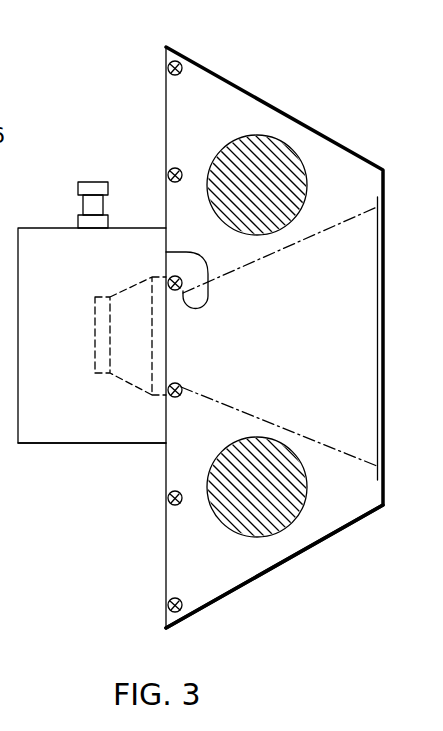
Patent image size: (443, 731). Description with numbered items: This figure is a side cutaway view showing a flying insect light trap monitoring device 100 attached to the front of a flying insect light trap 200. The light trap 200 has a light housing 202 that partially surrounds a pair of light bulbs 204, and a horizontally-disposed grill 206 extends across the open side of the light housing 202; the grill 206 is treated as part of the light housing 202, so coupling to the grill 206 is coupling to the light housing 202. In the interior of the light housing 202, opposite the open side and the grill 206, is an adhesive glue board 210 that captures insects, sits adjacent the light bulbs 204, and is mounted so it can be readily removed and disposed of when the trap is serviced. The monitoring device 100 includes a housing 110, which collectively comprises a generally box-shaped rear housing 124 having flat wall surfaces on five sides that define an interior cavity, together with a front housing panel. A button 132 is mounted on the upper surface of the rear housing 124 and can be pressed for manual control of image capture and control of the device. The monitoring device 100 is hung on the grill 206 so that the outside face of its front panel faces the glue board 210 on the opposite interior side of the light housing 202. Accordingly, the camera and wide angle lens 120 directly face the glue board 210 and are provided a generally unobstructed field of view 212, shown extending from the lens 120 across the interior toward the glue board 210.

The flying insect light trap monitoring device 100 is at (87, 305).
The housing 110 is at (127, 428).
The wide angle lens 120 is at (136, 388).
The rear housing 124 is at (84, 445).
The button 132 is at (92, 181).
The flying insect light trap 200 is at (268, 72).
The light housing 202 is at (329, 539).
The light bulbs 204 is at (212, 150).
The grill 206 is at (165, 68).
The adhesive glue board 210 is at (375, 320).
The field of view 212 is at (248, 411).